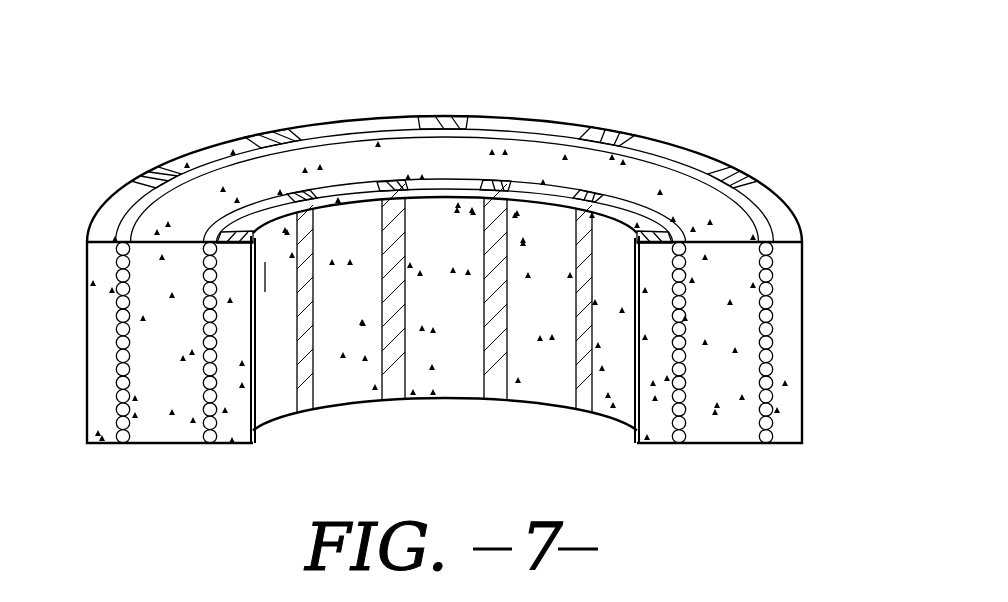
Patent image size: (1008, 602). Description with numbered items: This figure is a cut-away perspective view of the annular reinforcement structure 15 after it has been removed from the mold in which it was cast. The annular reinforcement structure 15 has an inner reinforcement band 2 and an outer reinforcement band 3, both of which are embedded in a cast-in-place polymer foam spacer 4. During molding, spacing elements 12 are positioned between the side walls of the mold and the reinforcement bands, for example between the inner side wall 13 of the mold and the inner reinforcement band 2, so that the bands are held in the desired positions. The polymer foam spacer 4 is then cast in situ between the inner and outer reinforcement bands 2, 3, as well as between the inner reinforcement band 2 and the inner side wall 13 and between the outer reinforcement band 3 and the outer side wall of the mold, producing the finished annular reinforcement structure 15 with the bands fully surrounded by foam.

The annular reinforcement structure 15 is at (165, 90).
The polymer foam spacer 4 is at (637, 180).
The outer reinforcement band 3 is at (773, 292).
The inner reinforcement band 2 is at (683, 318).
The spacing elements 12 is at (443, 117).
The inner side wall 13 is at (545, 383).